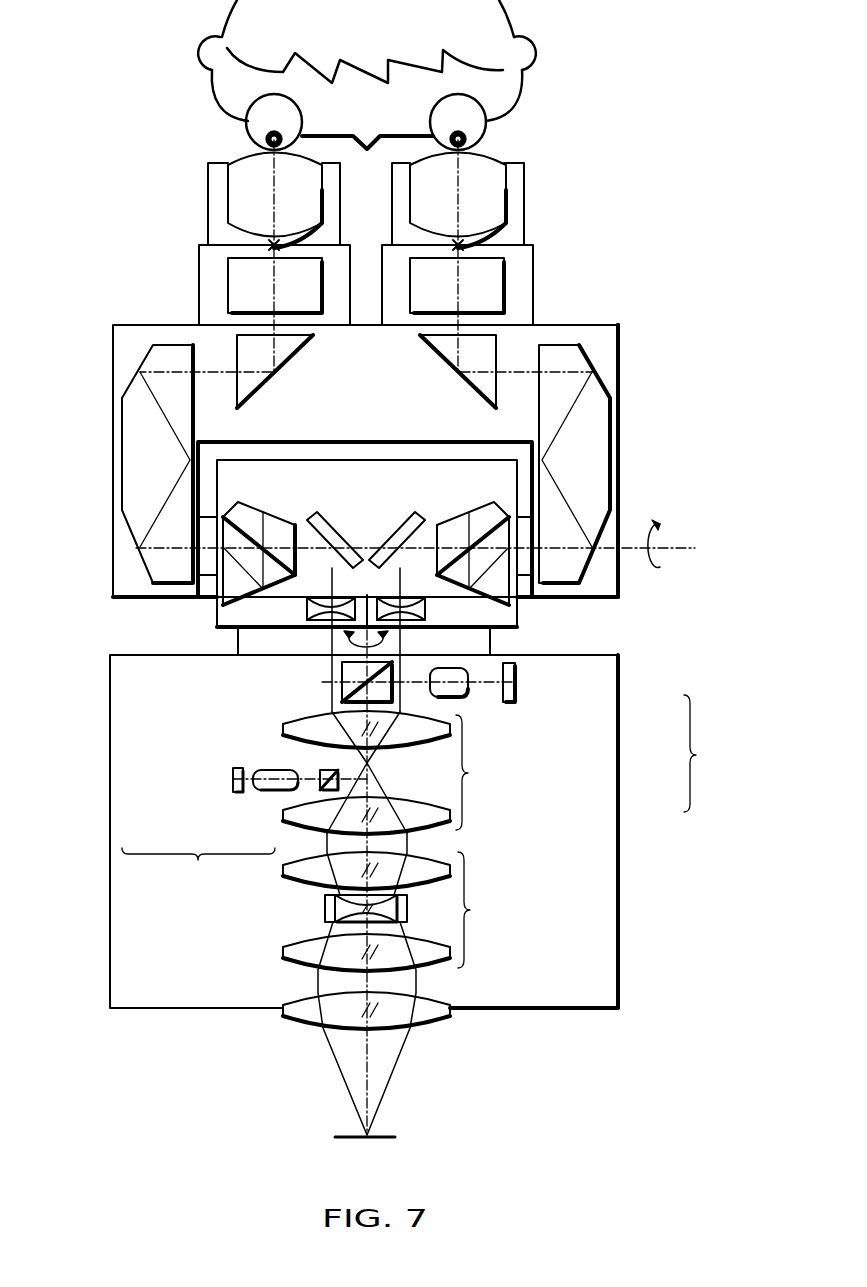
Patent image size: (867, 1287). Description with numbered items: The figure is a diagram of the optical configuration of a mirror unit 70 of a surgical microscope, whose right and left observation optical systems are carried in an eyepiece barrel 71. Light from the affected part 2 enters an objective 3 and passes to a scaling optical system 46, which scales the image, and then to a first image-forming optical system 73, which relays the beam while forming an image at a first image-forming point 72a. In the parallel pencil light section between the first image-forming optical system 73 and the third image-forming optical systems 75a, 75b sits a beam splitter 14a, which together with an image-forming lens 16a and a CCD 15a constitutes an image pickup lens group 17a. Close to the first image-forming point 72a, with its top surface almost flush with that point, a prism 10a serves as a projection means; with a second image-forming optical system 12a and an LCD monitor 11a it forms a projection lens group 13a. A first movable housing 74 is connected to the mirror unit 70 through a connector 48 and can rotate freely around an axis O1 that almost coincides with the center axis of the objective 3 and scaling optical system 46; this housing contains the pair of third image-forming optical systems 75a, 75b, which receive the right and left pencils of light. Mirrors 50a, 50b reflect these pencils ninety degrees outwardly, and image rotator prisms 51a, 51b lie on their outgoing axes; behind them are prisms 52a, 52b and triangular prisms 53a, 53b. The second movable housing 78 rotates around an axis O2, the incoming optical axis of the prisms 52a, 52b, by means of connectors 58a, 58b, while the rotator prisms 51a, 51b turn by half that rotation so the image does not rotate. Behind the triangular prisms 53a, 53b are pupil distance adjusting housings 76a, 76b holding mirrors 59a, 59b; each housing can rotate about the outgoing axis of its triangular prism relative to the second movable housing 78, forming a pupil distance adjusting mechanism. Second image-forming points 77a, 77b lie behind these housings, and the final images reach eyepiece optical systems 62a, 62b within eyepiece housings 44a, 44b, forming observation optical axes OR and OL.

The affected part 2 is at (388, 1132).
The objective 3 is at (430, 1025).
The prism 10a is at (320, 788).
The LCD monitor 11a is at (228, 782).
The second image-forming optical system 12a is at (260, 792).
The projection lens group 13a is at (230, 833).
The beam splitter 14a is at (388, 692).
The CCD 15a is at (515, 695).
The image-forming lens 16a is at (467, 695).
The image pickup lens group 17a is at (538, 737).
The eyepiece housing 44a is at (207, 182).
The eyepiece housing 44b is at (527, 183).
The scaling optical system 46 is at (389, 911).
The connector 48 is at (505, 640).
The mirror 50a is at (333, 520).
The mirror 50b is at (397, 520).
The image rotator prism 51a is at (223, 600).
The image rotator prism 51b is at (515, 598).
The prism 52a is at (133, 493).
The prism 52b is at (582, 568).
The triangular prism 53a is at (286, 362).
The triangular prism 53b is at (442, 353).
The connector 58a is at (210, 580).
The connector 58b is at (525, 585).
The mirror 59a is at (235, 297).
The mirror 59b is at (497, 297).
The eyepiece optical system 62a is at (247, 168).
The eyepiece optical system 62b is at (487, 157).
The mirror unit 70 is at (620, 936).
The eyepiece barrel 71 is at (632, 428).
The first image-forming point 72a is at (358, 763).
The first image-forming optical system 73 is at (389, 772).
The first movable housing 74 is at (455, 472).
The third image-forming optical system 75a is at (308, 608).
The third image-forming optical system 75b is at (424, 608).
The pupil distance adjusting housing 76a is at (198, 265).
The pupil distance adjusting housing 76b is at (537, 262).
The second image-forming point 77a is at (262, 241).
The second image-forming point 77b is at (467, 241).
The second movable housing 78 is at (620, 368).
The axis O1 is at (348, 642).
The axis O2 is at (687, 543).
The observation optical axis OR is at (275, 183).
The observation optical axis OL is at (458, 198).